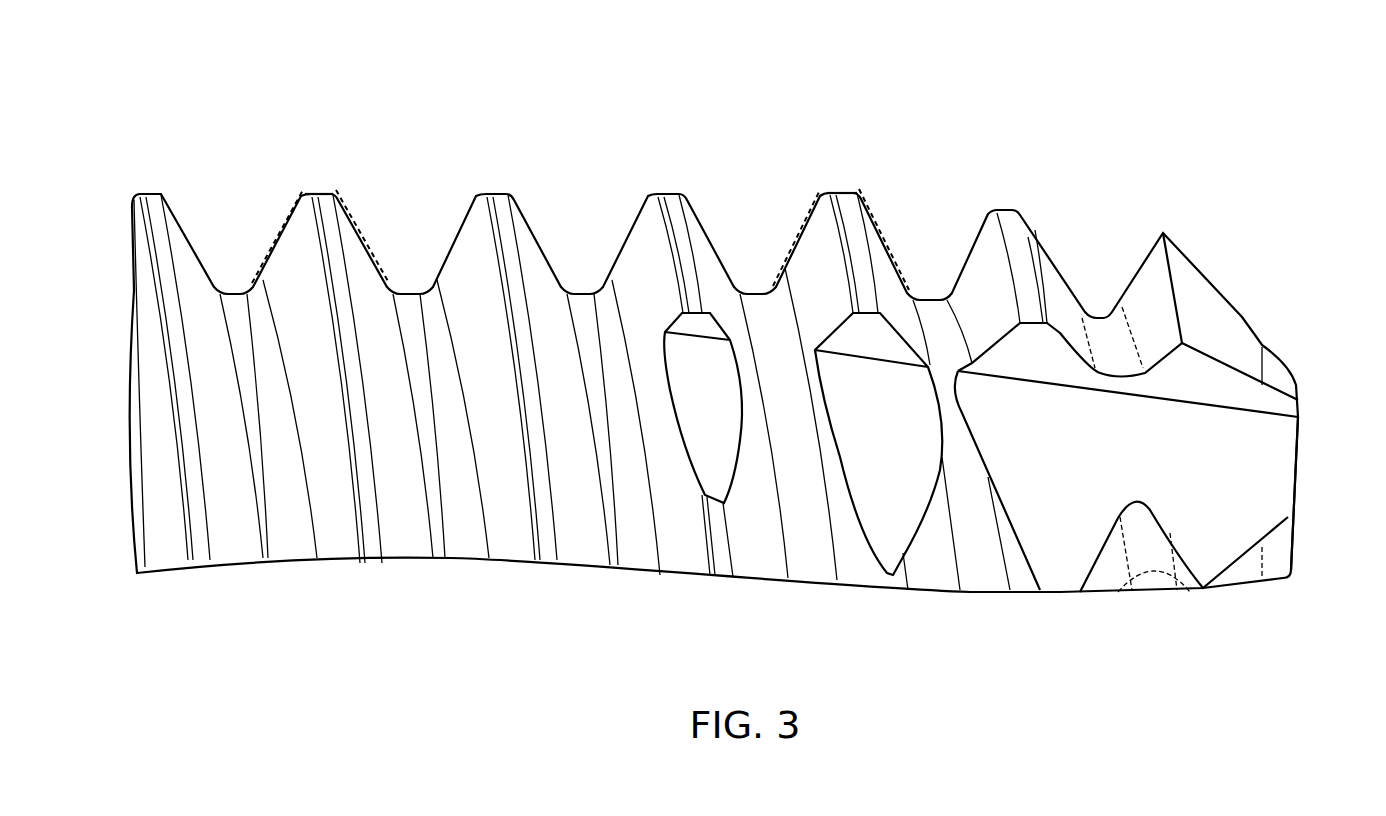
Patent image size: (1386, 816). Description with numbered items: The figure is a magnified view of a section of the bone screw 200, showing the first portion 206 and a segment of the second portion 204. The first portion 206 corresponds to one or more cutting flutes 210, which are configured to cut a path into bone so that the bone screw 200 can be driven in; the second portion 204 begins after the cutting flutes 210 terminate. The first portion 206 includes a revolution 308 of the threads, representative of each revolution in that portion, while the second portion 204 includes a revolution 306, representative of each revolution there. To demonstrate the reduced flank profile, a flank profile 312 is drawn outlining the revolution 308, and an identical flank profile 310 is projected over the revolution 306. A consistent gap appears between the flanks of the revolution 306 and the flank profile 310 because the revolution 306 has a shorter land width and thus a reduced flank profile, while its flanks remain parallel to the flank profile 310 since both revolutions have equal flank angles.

The bone screw 200 is at (1204, 131).
The second portion 204 is at (123, 623).
The first portion 206 is at (627, 623).
The cutting flutes 210 is at (1273, 472).
The revolution 306 is at (332, 195).
The revolution 308 is at (845, 197).
The flank profile 310 is at (367, 233).
The flank profile 312 is at (882, 238).